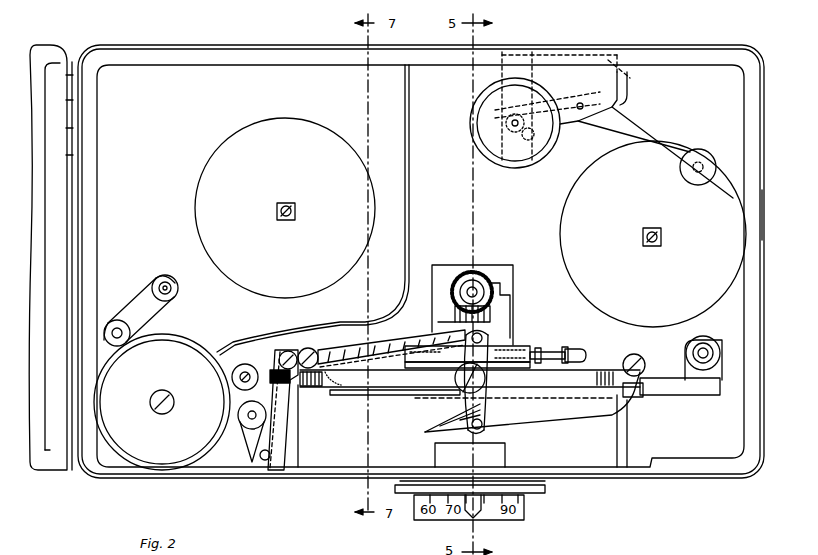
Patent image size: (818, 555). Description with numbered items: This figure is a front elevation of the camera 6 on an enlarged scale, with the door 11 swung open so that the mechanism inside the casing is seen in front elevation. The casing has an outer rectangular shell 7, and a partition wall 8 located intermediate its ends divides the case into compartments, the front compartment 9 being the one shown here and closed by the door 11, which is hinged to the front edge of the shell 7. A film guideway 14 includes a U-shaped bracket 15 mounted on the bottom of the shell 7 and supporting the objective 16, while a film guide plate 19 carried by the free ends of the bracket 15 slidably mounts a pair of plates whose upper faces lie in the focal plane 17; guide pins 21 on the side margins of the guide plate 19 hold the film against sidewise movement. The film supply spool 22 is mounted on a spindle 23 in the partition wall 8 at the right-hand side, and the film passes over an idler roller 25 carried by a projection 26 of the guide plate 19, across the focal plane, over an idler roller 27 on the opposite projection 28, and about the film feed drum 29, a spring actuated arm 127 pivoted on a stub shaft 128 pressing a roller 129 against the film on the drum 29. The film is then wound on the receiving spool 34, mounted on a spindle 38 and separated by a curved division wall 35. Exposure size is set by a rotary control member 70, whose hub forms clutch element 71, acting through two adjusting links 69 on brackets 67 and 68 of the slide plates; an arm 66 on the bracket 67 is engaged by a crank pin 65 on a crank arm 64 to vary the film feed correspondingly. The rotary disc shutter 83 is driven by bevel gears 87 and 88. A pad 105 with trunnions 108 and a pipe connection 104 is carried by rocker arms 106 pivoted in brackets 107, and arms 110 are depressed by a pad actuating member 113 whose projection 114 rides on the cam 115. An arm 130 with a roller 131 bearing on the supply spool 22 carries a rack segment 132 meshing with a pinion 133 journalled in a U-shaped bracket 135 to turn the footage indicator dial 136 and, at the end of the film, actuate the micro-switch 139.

The camera 6 is at (760, 162).
The outer rectangular shell 7 is at (765, 212).
The partition wall 8 is at (722, 108).
The front compartment 9 is at (686, 96).
The door 11 is at (90, 168).
The film guideway 14 is at (598, 373).
The U-shaped bracket 15 is at (627, 433).
The objective 16 is at (495, 455).
The focal plane 17 is at (372, 346).
The film guide plate 19 is at (312, 392).
The guide pins 21 is at (400, 378).
The film supply spool 22 is at (735, 247).
The spindle 23 is at (652, 228).
The idler roller 25 is at (715, 345).
The projection 26 is at (700, 395).
The idler roller 27 is at (232, 382).
The projection 28 is at (280, 355).
The film feed drum 29 is at (170, 352).
The receiving spool 34 is at (216, 163).
The curved division wall 35 is at (409, 205).
The spindle 38 is at (288, 203).
The crank arm 64 is at (247, 448).
The crank pin 65 is at (272, 454).
The arm 66 is at (283, 430).
The bracket 67 is at (318, 350).
The bracket 68 is at (646, 362).
The adjusting links 69 is at (598, 402).
The rotary control member 70 is at (466, 415).
The clutch element 71 is at (486, 380).
The rotary disc shutter 83 is at (400, 395).
The bevel gear 87 is at (455, 310).
The bevel gear 88 is at (462, 268).
The pipe connection 104 is at (578, 349).
The pad 105 is at (440, 368).
The rocker arms 106 is at (548, 352).
The brackets 107 is at (476, 375).
The trunnions 108 is at (568, 345).
The arms 110 is at (552, 348).
The pad actuating member 113 is at (442, 322).
The projection 114 is at (500, 300).
The cam 115 is at (480, 275).
The spring actuated arm 127 is at (160, 305).
The stub shaft 128 is at (178, 290).
The roller 129 is at (105, 323).
The arm 130 is at (660, 112).
The roller 131 is at (710, 160).
The rack segment 132 is at (537, 118).
The pinion 133 is at (492, 118).
The U-shaped bracket 135 is at (605, 83).
The footage indicator dial 136 is at (480, 130).
The micro-switch 139 is at (620, 104).